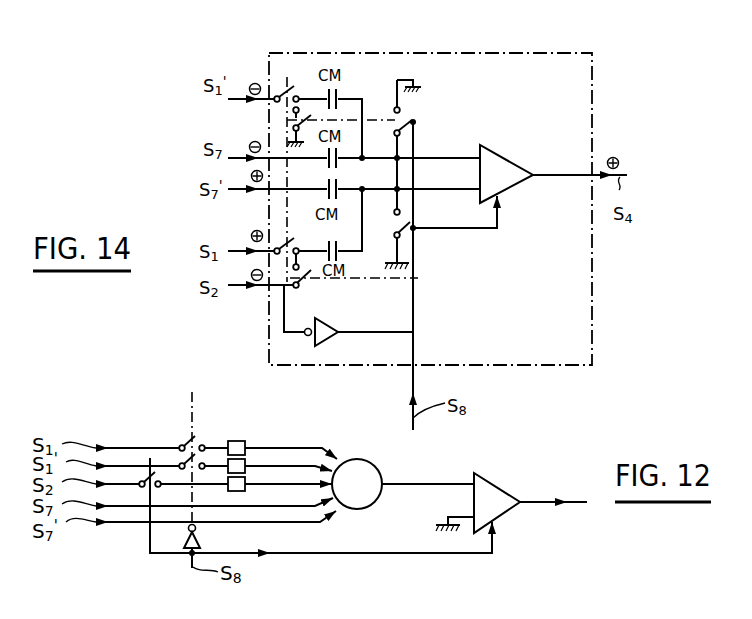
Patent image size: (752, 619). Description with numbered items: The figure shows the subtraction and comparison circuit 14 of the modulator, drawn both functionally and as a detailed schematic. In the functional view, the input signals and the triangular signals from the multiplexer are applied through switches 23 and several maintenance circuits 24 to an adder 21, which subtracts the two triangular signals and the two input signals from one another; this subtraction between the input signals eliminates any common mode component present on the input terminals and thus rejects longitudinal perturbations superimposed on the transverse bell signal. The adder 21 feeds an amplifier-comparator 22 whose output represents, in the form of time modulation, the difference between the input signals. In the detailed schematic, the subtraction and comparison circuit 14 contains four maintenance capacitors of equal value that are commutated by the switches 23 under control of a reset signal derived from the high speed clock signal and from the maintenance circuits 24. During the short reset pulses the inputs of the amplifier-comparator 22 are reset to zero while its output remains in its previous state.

In FIG. 14, the subtraction and comparison circuit 14 is at (502, 51).
In FIG. 12, the adder 21 is at (382, 470).
In FIG. 14, the amplifier-comparator 22 is at (512, 163).
In FIG. 12, the amplifier-comparator 22 is at (505, 492).
In FIG. 14, the switches 23 is at (347, 177).
In FIG. 12, the switches 23 is at (187, 456).
In FIG. 12, the maintenance circuits 24 is at (254, 477).